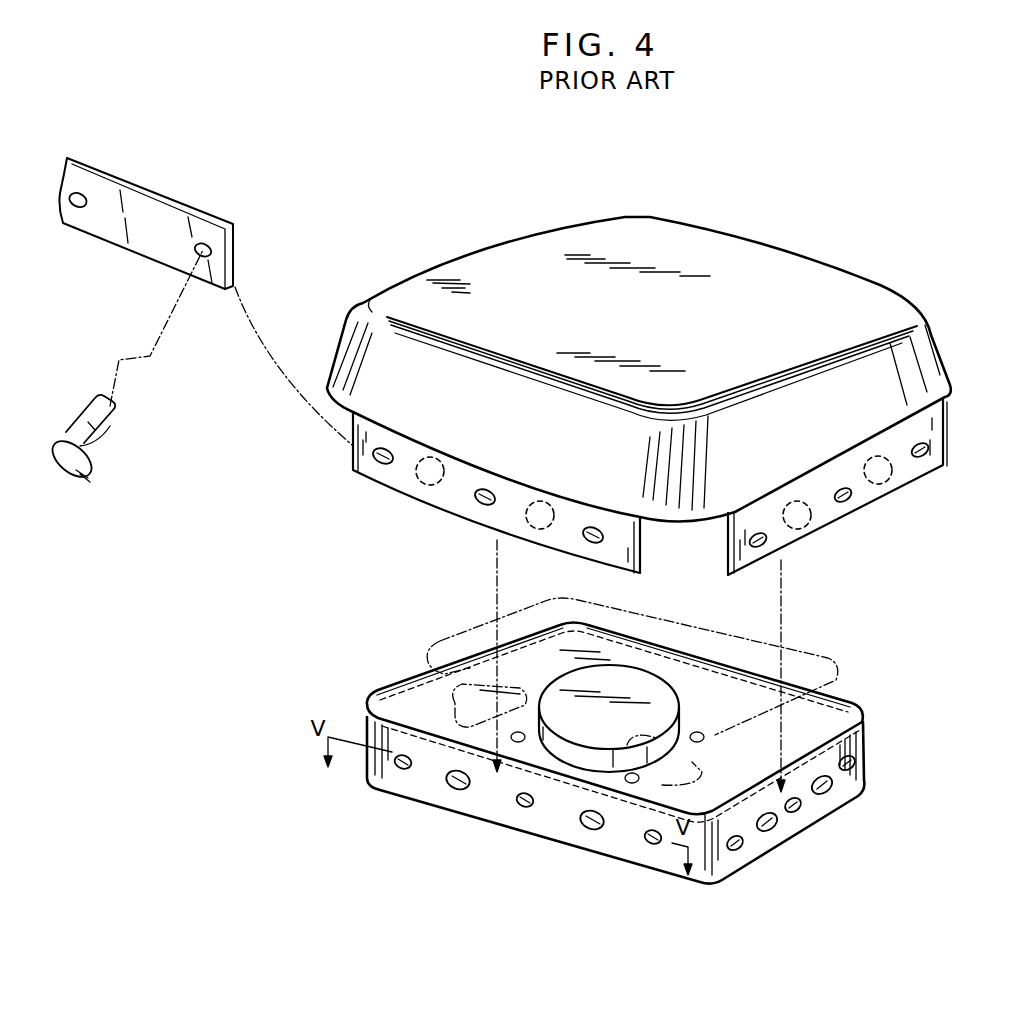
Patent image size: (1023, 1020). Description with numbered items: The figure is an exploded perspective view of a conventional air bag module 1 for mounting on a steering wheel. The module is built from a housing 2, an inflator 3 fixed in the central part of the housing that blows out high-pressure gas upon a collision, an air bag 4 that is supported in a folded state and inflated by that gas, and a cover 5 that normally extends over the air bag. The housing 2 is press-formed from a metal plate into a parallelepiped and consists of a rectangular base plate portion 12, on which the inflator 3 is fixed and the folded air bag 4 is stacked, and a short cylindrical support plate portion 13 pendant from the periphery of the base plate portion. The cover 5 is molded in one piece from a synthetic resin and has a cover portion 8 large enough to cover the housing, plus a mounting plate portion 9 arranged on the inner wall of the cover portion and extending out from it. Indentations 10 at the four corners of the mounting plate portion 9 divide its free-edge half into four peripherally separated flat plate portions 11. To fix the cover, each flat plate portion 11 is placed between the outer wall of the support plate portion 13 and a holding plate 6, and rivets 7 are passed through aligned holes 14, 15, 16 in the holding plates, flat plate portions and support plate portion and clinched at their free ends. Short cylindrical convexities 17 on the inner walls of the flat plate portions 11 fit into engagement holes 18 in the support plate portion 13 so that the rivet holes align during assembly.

The air bag module 1 is at (436, 268).
The housing 2 is at (371, 776).
The inflator 3 is at (642, 690).
The air bag 4 is at (812, 668).
The cover 5 is at (854, 288).
The holding plate 6 is at (147, 243).
The rivet 7 is at (103, 432).
The cover portion 8 is at (912, 360).
The mounting plate portion 9 is at (943, 410).
The indentation 10 is at (735, 512).
The flat plate portion 11 is at (447, 497).
The base plate portion 12 is at (430, 688).
The support plate portion 13 is at (857, 740).
The hole 14 is at (376, 462).
The hole 15 is at (399, 770).
The hole 16 is at (88, 206).
The short cylindrical convexity 17 is at (423, 482).
The engagement hole 18 is at (455, 790).